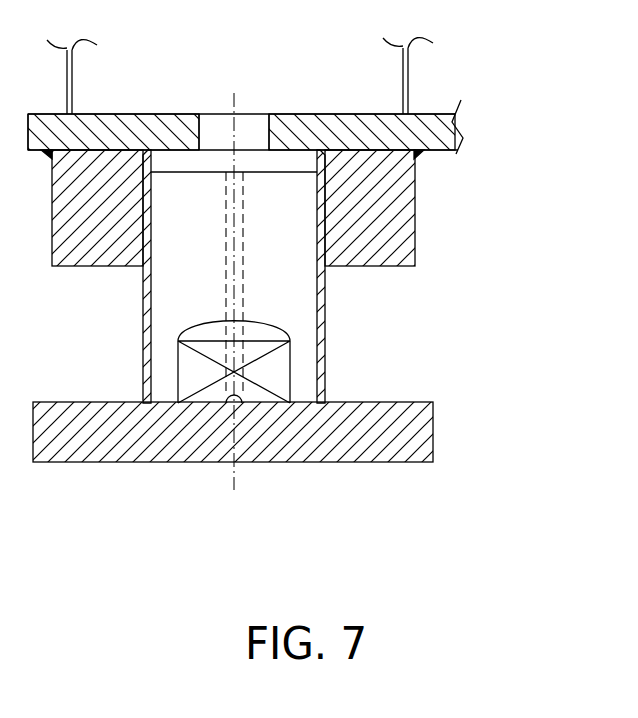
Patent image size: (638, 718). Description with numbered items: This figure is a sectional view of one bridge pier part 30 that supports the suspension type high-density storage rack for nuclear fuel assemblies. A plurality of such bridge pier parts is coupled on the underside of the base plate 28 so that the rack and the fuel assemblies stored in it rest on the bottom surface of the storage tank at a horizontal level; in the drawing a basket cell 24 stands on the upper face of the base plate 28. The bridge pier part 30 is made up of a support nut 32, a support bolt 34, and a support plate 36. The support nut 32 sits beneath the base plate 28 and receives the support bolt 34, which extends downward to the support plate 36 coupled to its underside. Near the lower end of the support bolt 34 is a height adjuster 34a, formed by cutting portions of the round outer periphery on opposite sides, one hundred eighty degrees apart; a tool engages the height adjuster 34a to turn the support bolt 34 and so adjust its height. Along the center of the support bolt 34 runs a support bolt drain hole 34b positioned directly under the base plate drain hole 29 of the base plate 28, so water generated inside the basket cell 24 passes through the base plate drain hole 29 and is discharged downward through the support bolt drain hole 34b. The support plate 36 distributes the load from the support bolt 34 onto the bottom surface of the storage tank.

The basket cell 24 is at (408, 83).
The base plate 28 is at (444, 133).
The base plate drain hole 29 is at (256, 122).
The bridge pier part 30 is at (577, 356).
The support nut 32 is at (405, 250).
The support bolt 34 is at (305, 303).
The height adjuster 34a is at (292, 375).
The support bolt drain hole 34b is at (230, 288).
The support plate 36 is at (425, 418).